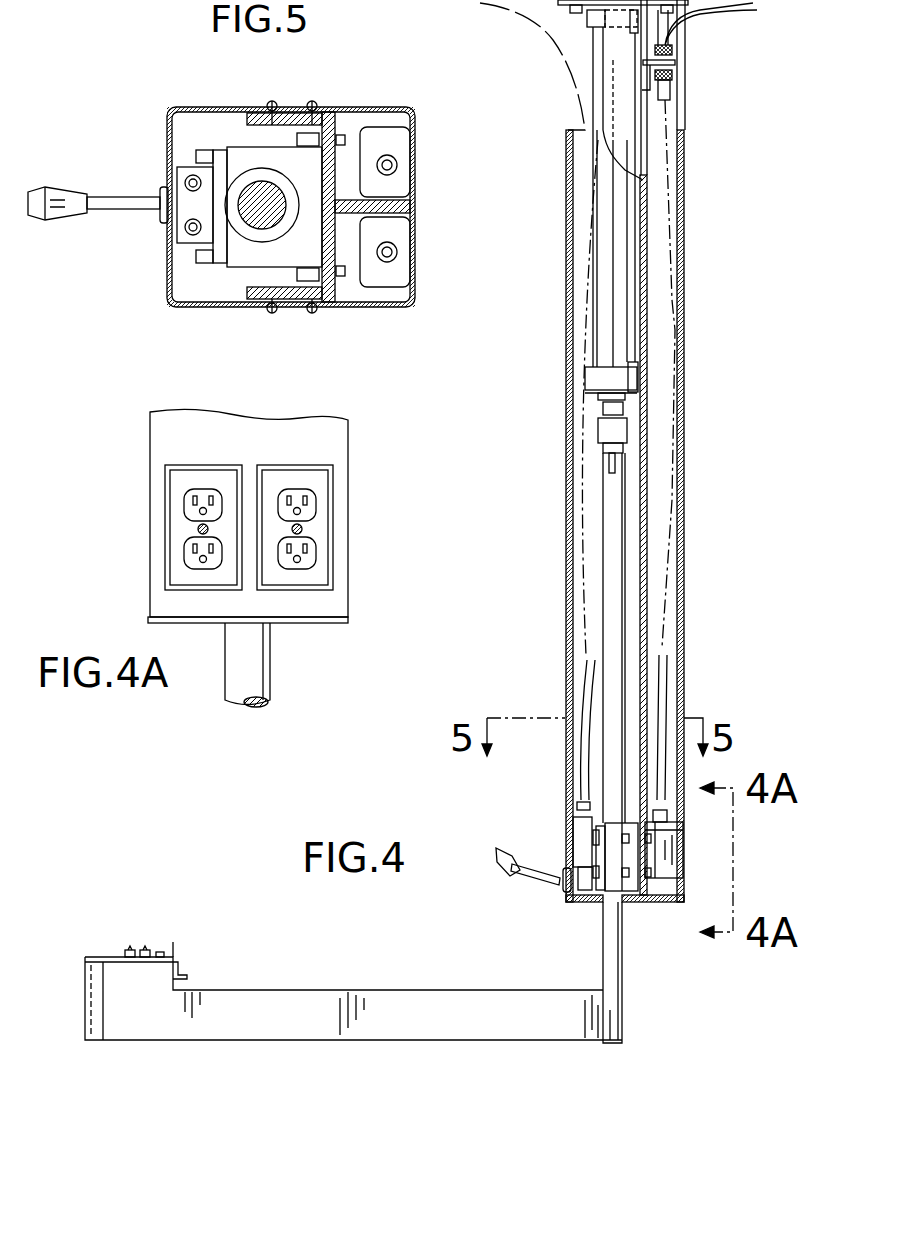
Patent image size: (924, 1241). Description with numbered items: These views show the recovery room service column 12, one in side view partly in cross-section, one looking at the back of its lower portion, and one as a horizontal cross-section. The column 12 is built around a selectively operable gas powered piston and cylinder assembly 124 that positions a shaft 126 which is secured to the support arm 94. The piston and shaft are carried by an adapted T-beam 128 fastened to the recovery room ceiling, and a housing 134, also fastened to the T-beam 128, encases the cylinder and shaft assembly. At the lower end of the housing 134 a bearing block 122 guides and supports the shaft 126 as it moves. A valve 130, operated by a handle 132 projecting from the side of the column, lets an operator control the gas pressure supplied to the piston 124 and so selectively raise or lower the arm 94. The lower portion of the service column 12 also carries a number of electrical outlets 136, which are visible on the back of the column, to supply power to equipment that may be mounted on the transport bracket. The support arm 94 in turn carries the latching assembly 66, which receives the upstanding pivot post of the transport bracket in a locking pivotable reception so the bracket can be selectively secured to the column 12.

In FIG. 4, the recovery room service column 12 is at (594, 516).
In FIG. 4, the latching assembly 66 is at (138, 950).
In FIG. 4, the support arm 94 is at (305, 990).
In FIG. 5, the bearing block 122 is at (255, 153).
In FIG. 4, the bearing block 122 is at (617, 882).
In FIG. 4, the gas powered piston and cylinder assembly 124 is at (602, 285).
In FIG. 5, the shaft 126 is at (247, 215).
In FIG. 4A, the shaft 126 is at (267, 657).
In FIG. 4, the shaft 126 is at (610, 950).
In FIG. 5, the T-beam 128 is at (403, 212).
In FIG. 4, the T-beam 128 is at (645, 253).
In FIG. 5, the valve 130 is at (188, 208).
In FIG. 4, the valve 130 is at (580, 830).
In FIG. 5, the handle 132 is at (143, 195).
In FIG. 4, the handle 132 is at (515, 868).
In FIG. 5, the housing 134 is at (350, 107).
In FIG. 4A, the housing 134 is at (167, 442).
In FIG. 4, the housing 134 is at (567, 622).
In FIG. 5, the electrical outlets 136 is at (403, 265).
In FIG. 4A, the electrical outlets 136 is at (320, 530).